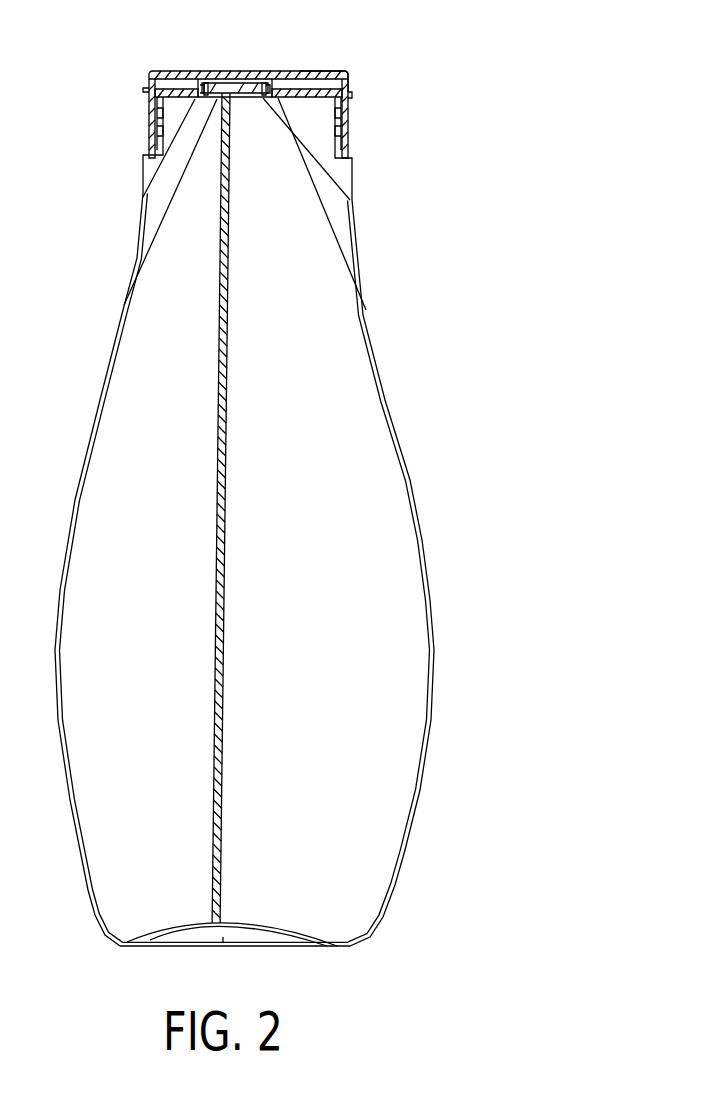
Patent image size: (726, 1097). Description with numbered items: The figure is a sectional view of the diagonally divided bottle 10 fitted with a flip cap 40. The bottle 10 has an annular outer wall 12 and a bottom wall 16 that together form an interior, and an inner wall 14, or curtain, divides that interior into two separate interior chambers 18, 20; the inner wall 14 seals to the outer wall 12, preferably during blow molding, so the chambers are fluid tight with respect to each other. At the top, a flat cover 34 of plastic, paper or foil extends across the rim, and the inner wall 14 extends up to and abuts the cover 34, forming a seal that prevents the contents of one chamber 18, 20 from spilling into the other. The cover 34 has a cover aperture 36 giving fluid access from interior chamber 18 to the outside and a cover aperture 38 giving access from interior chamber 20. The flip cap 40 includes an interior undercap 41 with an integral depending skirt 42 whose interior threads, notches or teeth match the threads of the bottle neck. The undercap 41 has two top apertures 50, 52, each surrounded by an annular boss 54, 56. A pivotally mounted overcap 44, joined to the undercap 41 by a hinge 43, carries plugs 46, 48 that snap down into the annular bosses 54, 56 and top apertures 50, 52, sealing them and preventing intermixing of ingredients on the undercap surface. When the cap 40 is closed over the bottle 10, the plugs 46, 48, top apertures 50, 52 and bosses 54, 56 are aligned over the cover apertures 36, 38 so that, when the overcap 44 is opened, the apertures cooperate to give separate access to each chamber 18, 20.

The diagonally divided bottle 10 is at (319, 559).
The annular outer wall 12 is at (433, 607).
The inner wall 14 is at (227, 412).
The bottom wall 16 is at (335, 946).
The interior chamber 18 is at (173, 652).
The interior chamber 20 is at (345, 643).
The flat cover 34 is at (308, 99).
The cover aperture 36 is at (137, 258).
The cover aperture 38 is at (357, 262).
The flip cap 40 is at (307, 68).
The interior undercap 41 is at (155, 70).
The depending skirt 42 is at (150, 130).
The hinge 43 is at (142, 91).
The overcap 44 is at (233, 72).
The plug 46 is at (203, 78).
The plug 48 is at (260, 77).
The top aperture 50 is at (142, 196).
The top aperture 52 is at (347, 200).
The annular boss 54 is at (190, 77).
The annular boss 56 is at (266, 78).